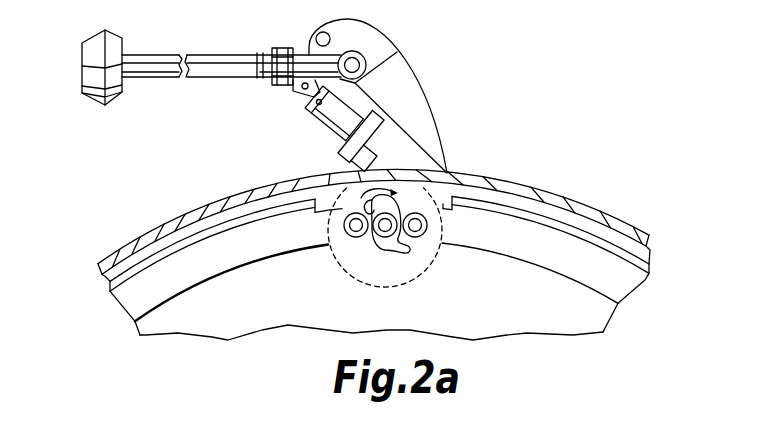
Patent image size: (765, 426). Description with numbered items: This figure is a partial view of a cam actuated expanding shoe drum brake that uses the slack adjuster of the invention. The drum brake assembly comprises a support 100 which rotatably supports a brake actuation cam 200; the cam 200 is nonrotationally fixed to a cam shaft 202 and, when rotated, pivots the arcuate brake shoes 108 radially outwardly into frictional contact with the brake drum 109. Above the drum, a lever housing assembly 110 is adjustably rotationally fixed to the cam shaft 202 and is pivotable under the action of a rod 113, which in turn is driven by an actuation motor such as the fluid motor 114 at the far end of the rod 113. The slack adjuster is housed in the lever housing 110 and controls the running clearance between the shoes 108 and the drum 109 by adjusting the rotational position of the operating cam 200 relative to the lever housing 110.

The support 100 is at (594, 323).
The arcuate brake shoes 108 is at (253, 245).
The brake drum 109 is at (608, 218).
The lever housing assembly 110 is at (449, 153).
The rod 113 is at (168, 80).
The fluid motor 114 is at (98, 105).
The brake actuation cam 200 is at (383, 250).
The cam shaft 202 is at (388, 230).